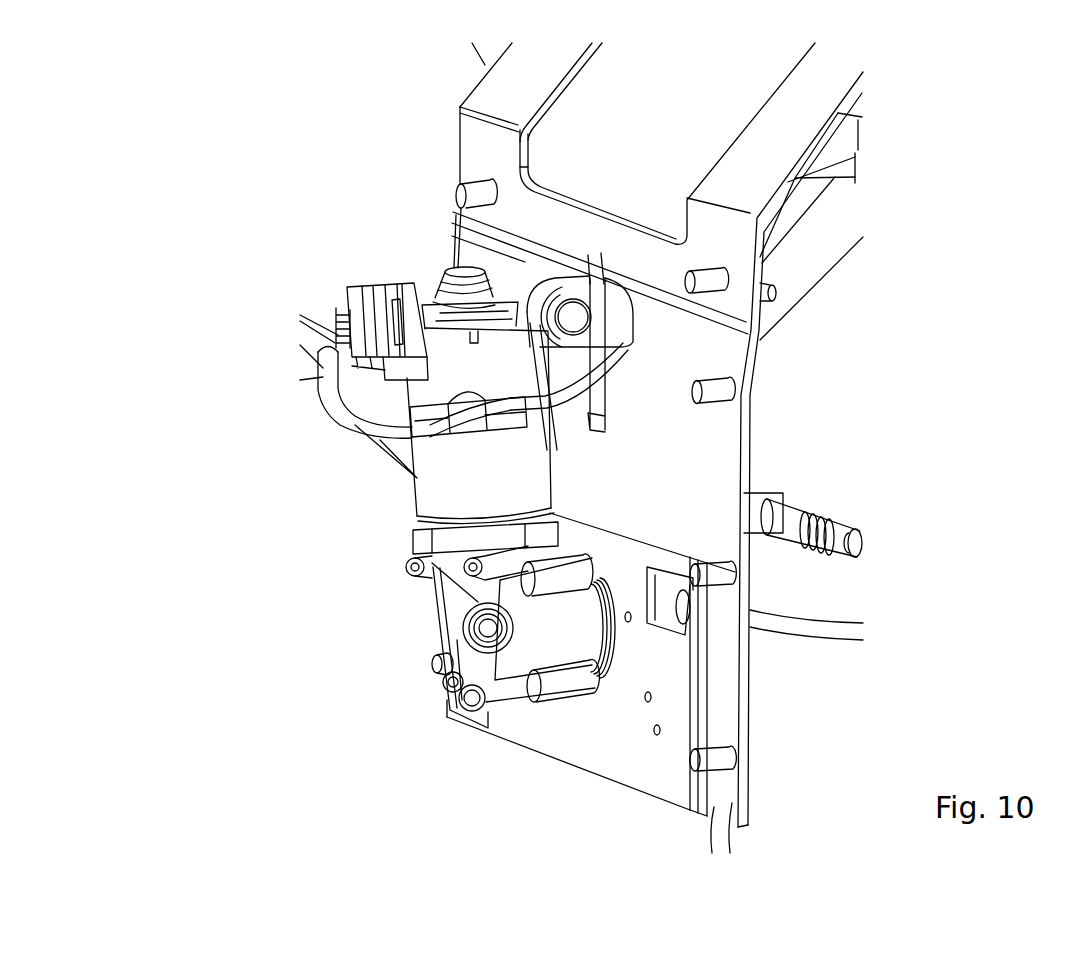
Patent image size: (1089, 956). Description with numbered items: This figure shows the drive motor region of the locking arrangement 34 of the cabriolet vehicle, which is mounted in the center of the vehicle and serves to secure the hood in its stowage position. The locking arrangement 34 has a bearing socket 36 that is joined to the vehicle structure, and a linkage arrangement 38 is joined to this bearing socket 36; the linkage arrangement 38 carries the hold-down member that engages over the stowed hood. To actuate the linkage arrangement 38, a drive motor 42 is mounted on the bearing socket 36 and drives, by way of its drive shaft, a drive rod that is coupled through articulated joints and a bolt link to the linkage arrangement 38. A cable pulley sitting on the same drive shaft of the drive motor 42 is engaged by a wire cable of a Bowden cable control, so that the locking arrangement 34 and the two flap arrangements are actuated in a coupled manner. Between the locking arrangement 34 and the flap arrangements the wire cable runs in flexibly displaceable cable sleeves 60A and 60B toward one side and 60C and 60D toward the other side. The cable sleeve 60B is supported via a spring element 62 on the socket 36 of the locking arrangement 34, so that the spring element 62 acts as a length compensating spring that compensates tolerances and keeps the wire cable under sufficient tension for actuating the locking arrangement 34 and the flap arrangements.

The locking arrangement 34 is at (497, 753).
The bearing socket 36 is at (617, 760).
The linkage arrangement 38 is at (592, 392).
The drive motor 42 is at (450, 480).
The cable sleeve 60A is at (830, 628).
The cable sleeve 60B is at (862, 547).
The cable sleeve 60C is at (302, 317).
The cable sleeve 60D is at (385, 450).
The spring element 62 is at (825, 518).